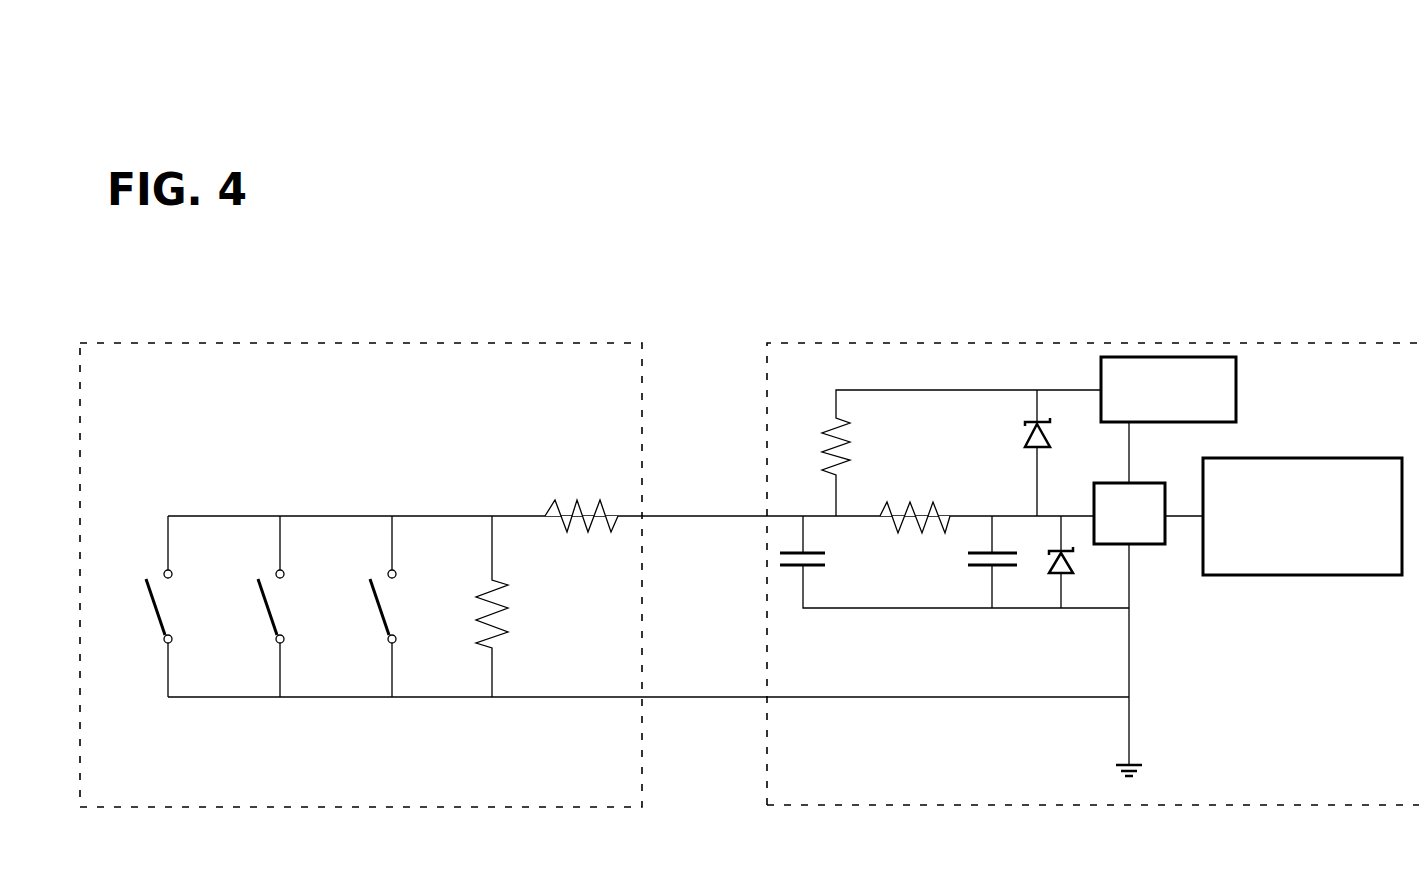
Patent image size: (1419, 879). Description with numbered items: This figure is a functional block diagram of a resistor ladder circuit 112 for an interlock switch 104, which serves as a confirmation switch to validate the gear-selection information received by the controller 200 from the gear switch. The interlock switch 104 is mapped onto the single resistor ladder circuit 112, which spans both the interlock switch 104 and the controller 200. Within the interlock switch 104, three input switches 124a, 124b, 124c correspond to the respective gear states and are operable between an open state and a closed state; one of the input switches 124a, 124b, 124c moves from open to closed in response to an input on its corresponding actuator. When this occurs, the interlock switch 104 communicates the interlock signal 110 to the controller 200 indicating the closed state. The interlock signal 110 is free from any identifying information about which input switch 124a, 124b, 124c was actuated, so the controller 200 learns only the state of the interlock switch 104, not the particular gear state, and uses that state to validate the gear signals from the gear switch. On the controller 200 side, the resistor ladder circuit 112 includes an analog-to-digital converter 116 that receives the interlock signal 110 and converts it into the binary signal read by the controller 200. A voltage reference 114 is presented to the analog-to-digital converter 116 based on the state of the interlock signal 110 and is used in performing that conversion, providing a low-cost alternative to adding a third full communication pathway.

The resistor ladder circuit 112 is at (1213, 100).
The interlock switch 104 is at (583, 792).
The input switch 124a is at (152, 603).
The input switch 124b is at (265, 603).
The input switch 124c is at (377, 603).
The controller 200 is at (1365, 792).
The voltage reference 114 is at (1190, 358).
The analog-to-digital converter 116 is at (1168, 546).
The interlock signal 110 is at (1322, 552).